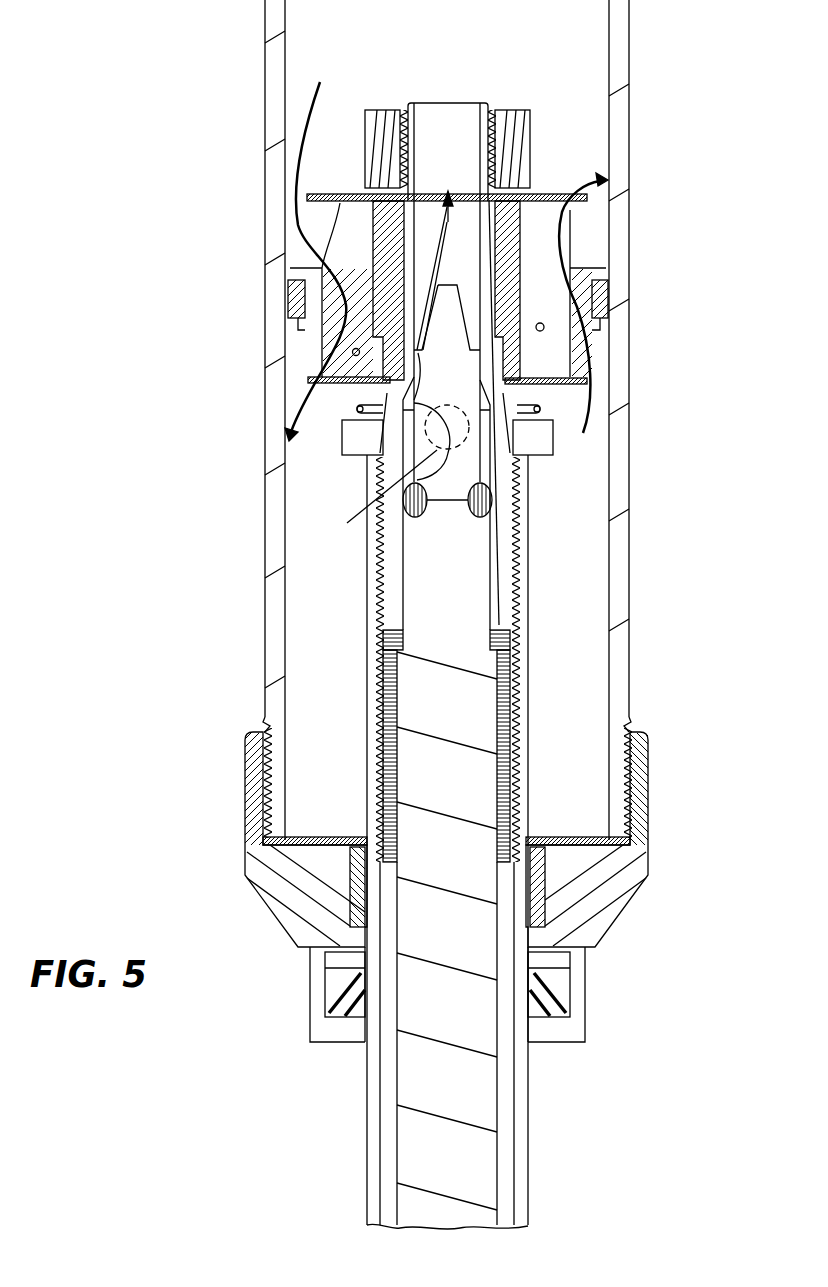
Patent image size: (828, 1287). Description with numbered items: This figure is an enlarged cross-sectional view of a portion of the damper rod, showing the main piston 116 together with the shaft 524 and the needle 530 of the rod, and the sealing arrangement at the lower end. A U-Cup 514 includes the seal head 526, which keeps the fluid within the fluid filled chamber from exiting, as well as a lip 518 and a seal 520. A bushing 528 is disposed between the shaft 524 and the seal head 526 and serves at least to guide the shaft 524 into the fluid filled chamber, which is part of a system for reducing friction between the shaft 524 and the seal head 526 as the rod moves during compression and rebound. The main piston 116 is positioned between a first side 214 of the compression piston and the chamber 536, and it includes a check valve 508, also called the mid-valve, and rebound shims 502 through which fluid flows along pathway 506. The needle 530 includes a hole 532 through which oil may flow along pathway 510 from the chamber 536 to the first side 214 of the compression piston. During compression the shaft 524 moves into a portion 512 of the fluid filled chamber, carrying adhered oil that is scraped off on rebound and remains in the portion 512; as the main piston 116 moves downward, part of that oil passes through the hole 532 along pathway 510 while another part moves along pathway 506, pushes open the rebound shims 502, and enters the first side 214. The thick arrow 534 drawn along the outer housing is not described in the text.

The first side of the compression piston 214 is at (580, 78).
The pathway 510 is at (543, 196).
The rebound shims 502 is at (450, 219).
The fluid flow path 534 is at (305, 128).
The main piston 116 is at (251, 197).
The pathway 506 is at (598, 362).
The check valve 508 is at (562, 390).
The portion of the fluid filled chamber 512 is at (585, 590).
The hole 532 is at (447, 455).
The chamber 536 is at (347, 759).
The needle 530 is at (467, 866).
The bushing 528 is at (300, 927).
The seal head 526 is at (353, 877).
The U-Cup 514 is at (622, 912).
The lip 518 is at (585, 975).
The seal 520 is at (553, 1042).
The shaft 524 is at (368, 1085).